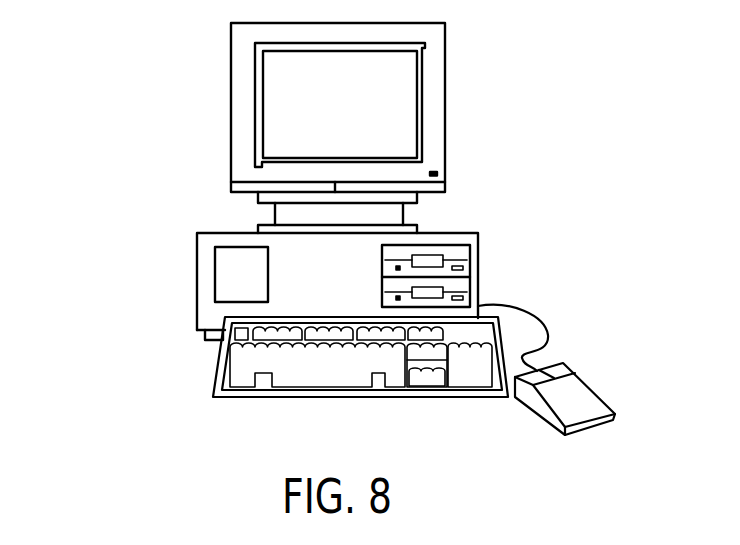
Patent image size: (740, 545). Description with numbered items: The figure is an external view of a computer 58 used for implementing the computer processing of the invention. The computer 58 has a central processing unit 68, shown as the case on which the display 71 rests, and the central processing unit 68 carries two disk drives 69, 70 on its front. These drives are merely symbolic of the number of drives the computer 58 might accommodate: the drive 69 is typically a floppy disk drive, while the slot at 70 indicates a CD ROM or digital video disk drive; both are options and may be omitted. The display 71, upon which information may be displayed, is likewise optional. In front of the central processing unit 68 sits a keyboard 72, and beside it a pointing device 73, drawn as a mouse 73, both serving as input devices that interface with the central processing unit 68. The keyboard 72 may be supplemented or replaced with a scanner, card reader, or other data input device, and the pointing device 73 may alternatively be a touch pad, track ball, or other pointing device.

The computer 58 is at (110, 68).
The display 71 is at (462, 77).
The central processing unit 68 is at (201, 218).
The floppy disk drive 69 is at (364, 261).
The CD ROM or digital video disk drive slot 70 is at (364, 291).
The keyboard 72 is at (203, 360).
The pointing device 73 is at (611, 374).